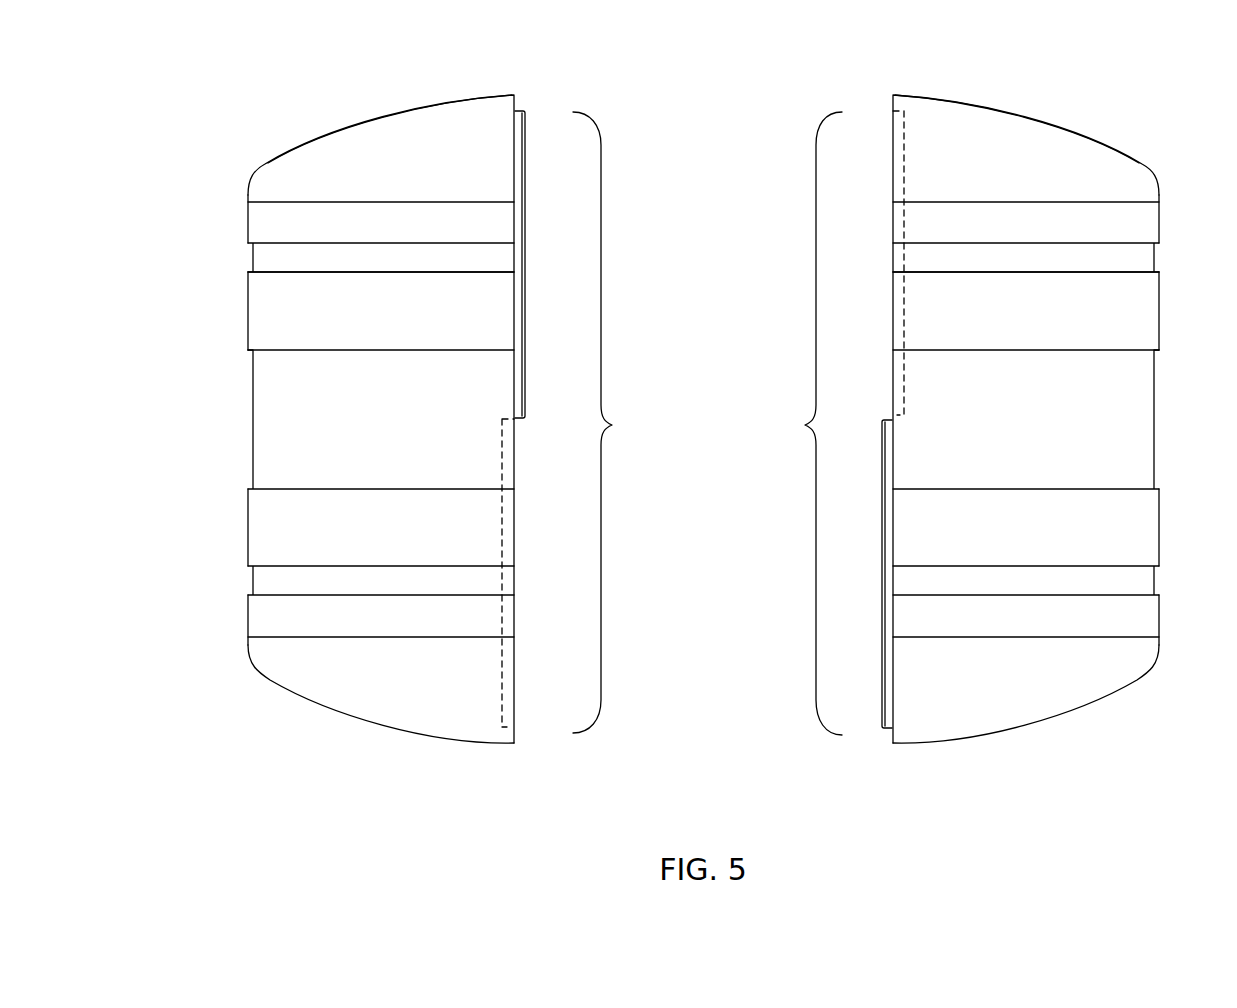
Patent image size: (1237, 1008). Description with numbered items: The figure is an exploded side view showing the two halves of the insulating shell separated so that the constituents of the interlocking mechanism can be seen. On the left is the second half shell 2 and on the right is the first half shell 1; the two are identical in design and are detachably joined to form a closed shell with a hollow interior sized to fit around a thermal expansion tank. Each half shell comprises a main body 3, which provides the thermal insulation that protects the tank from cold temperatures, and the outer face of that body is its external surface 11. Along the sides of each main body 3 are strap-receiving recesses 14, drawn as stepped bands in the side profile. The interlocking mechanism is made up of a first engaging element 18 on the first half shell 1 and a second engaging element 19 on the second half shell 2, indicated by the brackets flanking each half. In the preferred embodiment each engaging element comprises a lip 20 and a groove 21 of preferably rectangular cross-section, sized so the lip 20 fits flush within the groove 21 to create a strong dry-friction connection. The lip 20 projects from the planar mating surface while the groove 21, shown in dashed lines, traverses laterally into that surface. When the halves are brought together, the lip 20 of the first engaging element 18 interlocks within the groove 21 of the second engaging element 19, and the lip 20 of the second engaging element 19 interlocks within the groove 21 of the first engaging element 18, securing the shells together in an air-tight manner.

The first half shell 1 is at (1060, 778).
The second half shell 2 is at (345, 778).
The main body 3 is at (444, 101).
The external surface 11 is at (373, 337).
The strap-receiving recess 14 is at (250, 258).
The first engaging element 18 is at (808, 423).
The second engaging element 19 is at (607, 422).
The lip 20 is at (519, 277).
The groove 21 is at (518, 503).